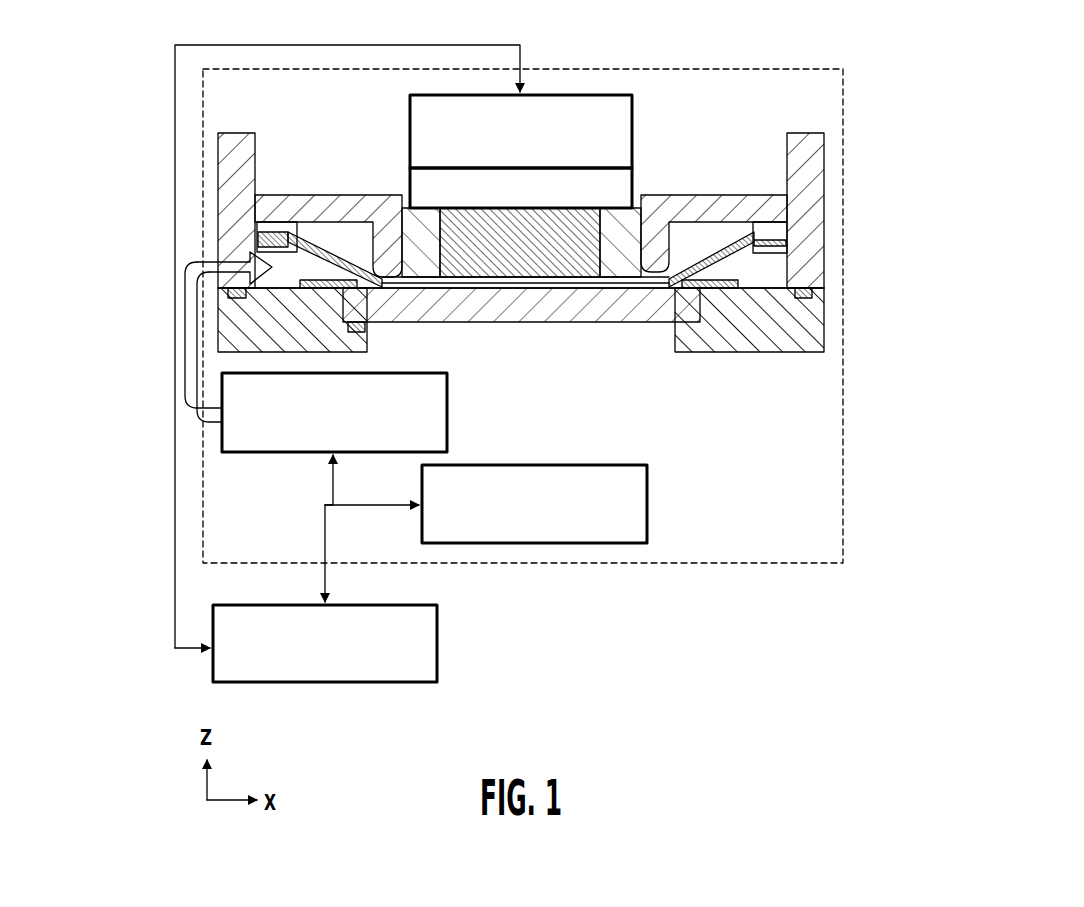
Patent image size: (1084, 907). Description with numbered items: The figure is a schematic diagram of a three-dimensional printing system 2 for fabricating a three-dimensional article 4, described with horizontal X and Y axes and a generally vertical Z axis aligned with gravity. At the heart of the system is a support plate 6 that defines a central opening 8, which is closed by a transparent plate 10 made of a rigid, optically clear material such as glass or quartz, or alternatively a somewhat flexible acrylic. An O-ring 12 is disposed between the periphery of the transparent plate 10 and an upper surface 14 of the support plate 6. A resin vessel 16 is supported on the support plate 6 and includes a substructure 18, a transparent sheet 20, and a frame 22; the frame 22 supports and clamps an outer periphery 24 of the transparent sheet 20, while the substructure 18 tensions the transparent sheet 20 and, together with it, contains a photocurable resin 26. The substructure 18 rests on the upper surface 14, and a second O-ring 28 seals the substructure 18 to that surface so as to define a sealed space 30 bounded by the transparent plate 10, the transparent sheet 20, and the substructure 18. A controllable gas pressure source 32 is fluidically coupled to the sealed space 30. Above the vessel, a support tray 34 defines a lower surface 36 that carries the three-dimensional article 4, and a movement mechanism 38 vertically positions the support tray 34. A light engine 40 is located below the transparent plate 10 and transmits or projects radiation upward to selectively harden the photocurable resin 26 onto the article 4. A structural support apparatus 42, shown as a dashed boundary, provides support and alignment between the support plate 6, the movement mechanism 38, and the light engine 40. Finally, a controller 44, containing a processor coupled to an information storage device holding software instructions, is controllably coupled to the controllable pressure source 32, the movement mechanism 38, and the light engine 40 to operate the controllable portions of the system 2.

The three-dimensional printing system 2 is at (643, 12).
The three-dimensional article 4 is at (647, 197).
The support plate 6 is at (776, 340).
The central opening 8 is at (521, 343).
The transparent plate 10 is at (497, 312).
The O-ring 12 is at (365, 328).
The upper surface 14 is at (760, 288).
The resin vessel 16 is at (182, 210).
The substructure 18 is at (238, 210).
The transparent sheet 20 is at (325, 248).
The frame 22 is at (272, 225).
The outer periphery 24 is at (760, 245).
The photocurable resin 26 is at (425, 255).
The O-ring 28 is at (810, 296).
The sealed space 30 is at (750, 272).
The controllable gas pressure source 32 is at (447, 400).
The support tray 34 is at (410, 185).
The lower surface 36 is at (565, 250).
The movement mechanism 38 is at (410, 125).
The light engine 40 is at (647, 490).
The structural support apparatus 42 is at (525, 563).
The controller 44 is at (437, 632).